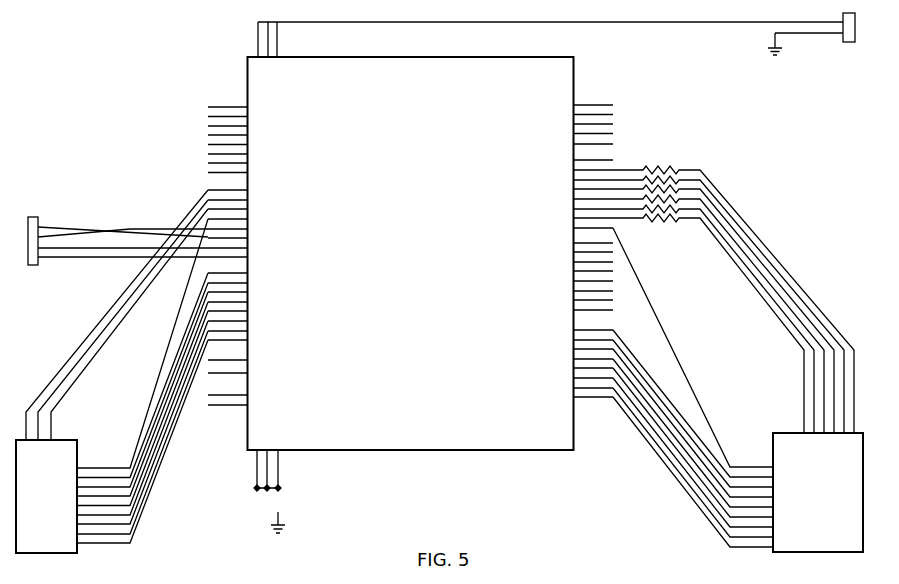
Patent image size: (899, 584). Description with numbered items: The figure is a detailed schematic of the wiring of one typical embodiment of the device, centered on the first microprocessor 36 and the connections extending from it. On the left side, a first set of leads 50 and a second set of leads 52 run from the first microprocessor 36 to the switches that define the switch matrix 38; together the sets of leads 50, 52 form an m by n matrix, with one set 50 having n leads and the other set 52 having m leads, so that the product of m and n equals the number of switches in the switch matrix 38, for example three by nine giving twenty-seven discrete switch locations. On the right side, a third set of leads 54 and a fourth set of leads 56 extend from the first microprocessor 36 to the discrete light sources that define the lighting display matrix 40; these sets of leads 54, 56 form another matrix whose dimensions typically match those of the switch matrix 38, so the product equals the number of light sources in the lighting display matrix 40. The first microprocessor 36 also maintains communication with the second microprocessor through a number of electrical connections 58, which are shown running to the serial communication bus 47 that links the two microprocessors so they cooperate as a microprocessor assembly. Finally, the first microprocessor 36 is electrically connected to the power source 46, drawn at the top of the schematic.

The first microprocessor 36 is at (408, 328).
The switch matrix 38 is at (48, 513).
The lighting display matrix 40 is at (840, 513).
The power source 46 is at (849, 42).
The serial communication bus 47 is at (33, 265).
The first set of electrical leads 50 is at (79, 347).
The second set of electrical leads 52 is at (152, 488).
The third set of electrical leads 54 is at (751, 229).
The fourth set of electrical leads 56 is at (684, 490).
The electrical connections 58 is at (133, 229).